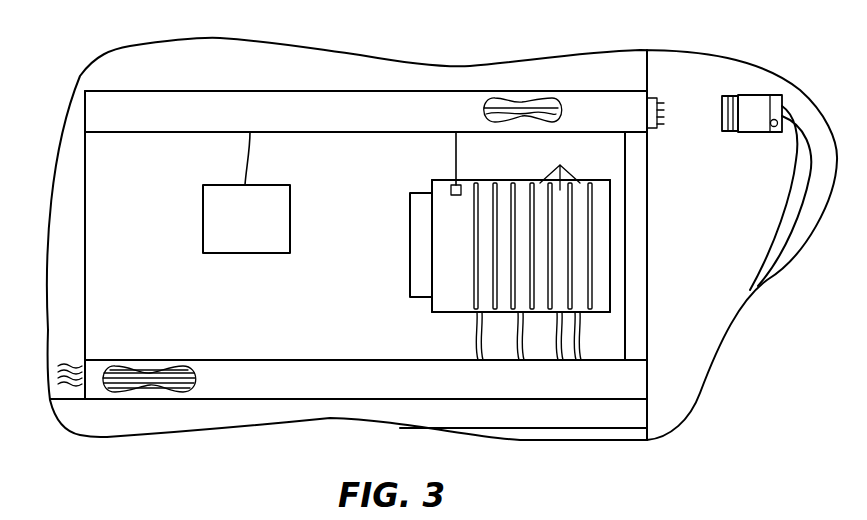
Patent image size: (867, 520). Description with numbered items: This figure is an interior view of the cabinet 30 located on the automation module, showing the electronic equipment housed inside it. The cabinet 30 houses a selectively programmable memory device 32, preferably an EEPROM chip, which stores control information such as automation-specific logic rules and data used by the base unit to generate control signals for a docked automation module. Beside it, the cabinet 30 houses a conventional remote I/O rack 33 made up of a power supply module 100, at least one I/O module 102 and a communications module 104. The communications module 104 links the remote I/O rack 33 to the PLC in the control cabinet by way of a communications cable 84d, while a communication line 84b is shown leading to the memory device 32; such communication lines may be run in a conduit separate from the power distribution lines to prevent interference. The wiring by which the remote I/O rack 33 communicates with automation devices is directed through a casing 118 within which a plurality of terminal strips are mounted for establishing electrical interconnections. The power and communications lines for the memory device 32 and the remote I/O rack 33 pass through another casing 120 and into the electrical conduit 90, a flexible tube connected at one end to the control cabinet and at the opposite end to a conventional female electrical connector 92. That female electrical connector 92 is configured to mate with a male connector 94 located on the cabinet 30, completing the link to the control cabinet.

The cabinet 30 is at (336, 91).
The selectively programmable memory device 32 is at (260, 231).
The remote I/O rack 33 is at (410, 228).
The communication line 84b is at (246, 146).
The communications cable 84d is at (452, 147).
The electrical conduit 90 is at (772, 235).
The female electrical connector 92 is at (757, 124).
The male connector 94 is at (658, 128).
The power supply module 100 is at (422, 281).
The I/O module 102 is at (560, 166).
The communications module 104 is at (441, 304).
The casing 118 is at (340, 391).
The casing 120 is at (419, 123).